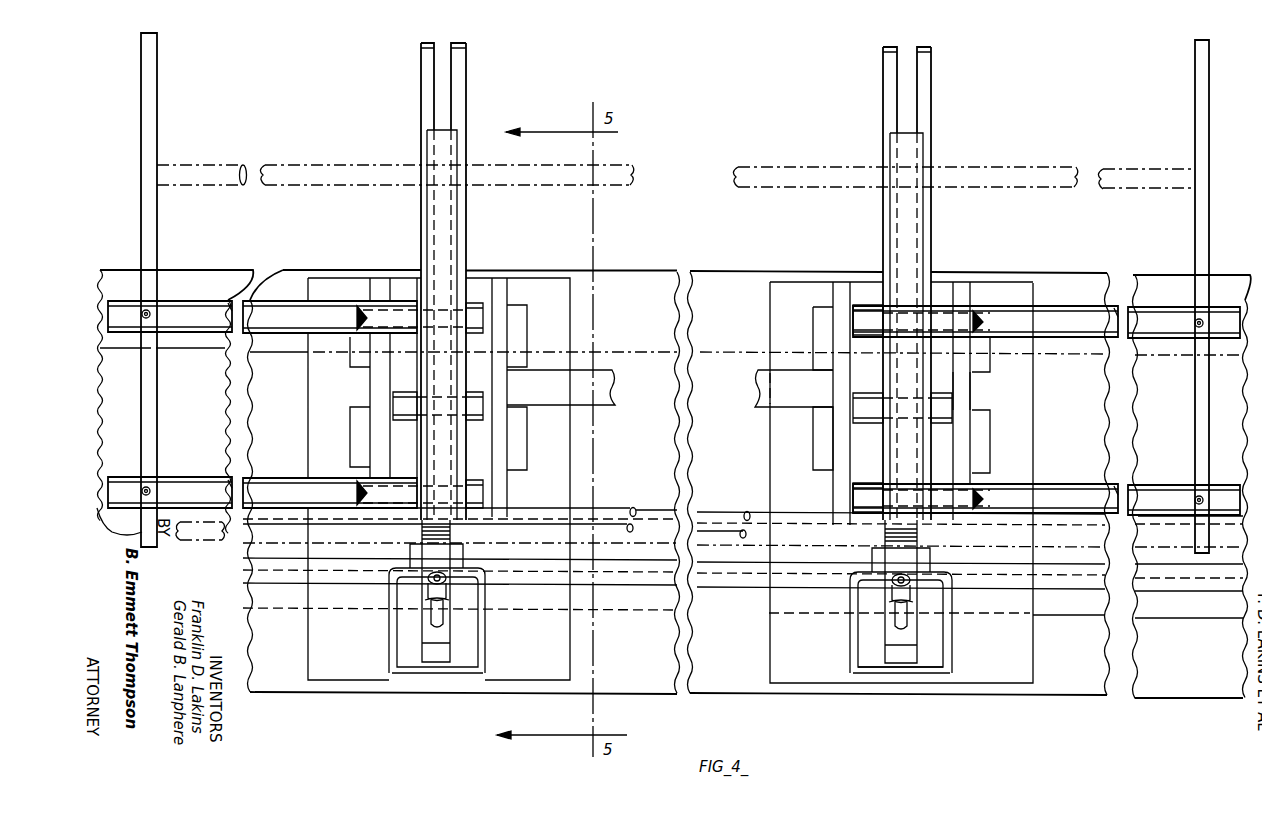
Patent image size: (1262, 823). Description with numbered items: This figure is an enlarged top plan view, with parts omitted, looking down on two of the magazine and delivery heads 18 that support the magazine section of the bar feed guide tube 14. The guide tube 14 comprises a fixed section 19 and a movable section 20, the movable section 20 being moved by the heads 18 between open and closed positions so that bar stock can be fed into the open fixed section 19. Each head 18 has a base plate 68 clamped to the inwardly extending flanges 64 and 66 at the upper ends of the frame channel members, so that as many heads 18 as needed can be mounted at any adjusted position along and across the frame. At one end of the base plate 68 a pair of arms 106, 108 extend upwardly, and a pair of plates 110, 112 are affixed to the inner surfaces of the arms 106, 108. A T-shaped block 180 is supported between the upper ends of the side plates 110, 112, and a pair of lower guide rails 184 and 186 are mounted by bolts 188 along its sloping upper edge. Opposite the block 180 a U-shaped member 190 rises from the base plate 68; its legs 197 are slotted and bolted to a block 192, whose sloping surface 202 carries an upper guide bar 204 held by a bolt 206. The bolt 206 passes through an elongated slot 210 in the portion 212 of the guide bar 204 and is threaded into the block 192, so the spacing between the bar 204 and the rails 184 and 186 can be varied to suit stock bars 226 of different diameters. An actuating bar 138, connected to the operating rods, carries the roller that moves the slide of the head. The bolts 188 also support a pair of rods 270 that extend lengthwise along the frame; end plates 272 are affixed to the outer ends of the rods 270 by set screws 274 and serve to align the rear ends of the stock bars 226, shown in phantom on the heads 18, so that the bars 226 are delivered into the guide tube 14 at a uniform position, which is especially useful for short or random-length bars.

The bar feed guide tube 14 is at (622, 598).
The magazine and delivery head 18 is at (476, 262).
The fixed section 19 is at (743, 586).
The movable section 20 is at (740, 533).
The flange 64 is at (966, 676).
The flange 66 is at (969, 484).
The base plate 68 is at (901, 596).
The arm 106 is at (991, 439).
The arm 108 is at (991, 359).
The plate 110 is at (976, 387).
The plate 112 is at (833, 489).
The actuating bar 138 is at (670, 388).
The T-shaped block 180 is at (475, 477).
The lower guide rail 184 is at (932, 92).
The lower guide rail 186 is at (883, 92).
The bolt 188 is at (941, 424).
The U-shaped member 190 is at (488, 637).
The block 192 is at (854, 678).
The leg 197 is at (953, 647).
The sloping surface 202 is at (902, 673).
The upper guide bar 204 is at (910, 156).
The bolt 206 is at (901, 576).
The elongated slot 210 is at (904, 618).
The portion 212 is at (888, 654).
The stock bar 226 is at (620, 503).
The rod 270 is at (674, 408).
The end plate 272 is at (159, 106).
The set screw 274 is at (150, 309).